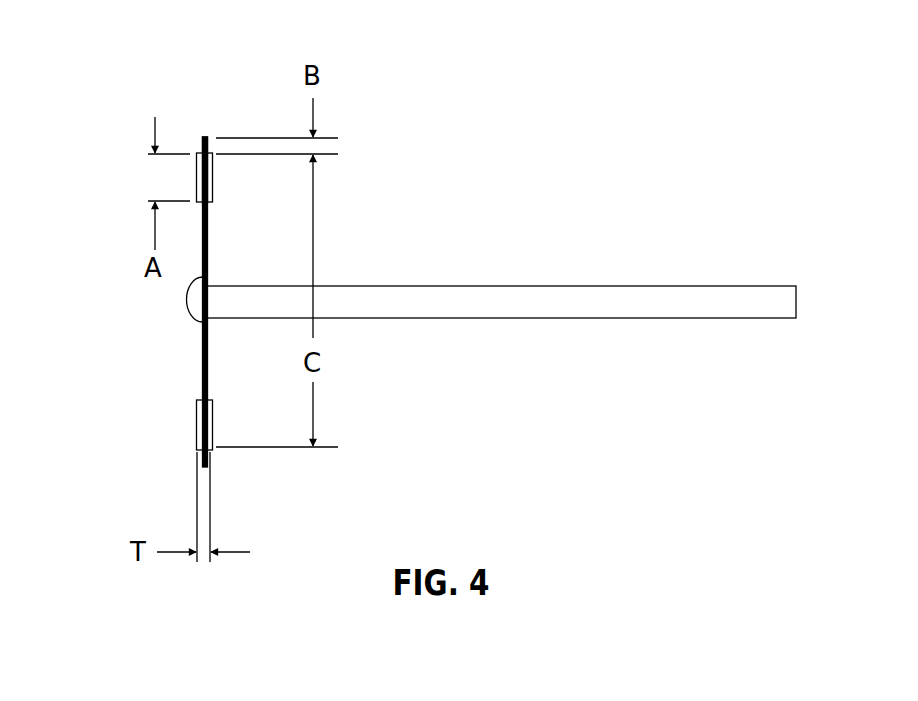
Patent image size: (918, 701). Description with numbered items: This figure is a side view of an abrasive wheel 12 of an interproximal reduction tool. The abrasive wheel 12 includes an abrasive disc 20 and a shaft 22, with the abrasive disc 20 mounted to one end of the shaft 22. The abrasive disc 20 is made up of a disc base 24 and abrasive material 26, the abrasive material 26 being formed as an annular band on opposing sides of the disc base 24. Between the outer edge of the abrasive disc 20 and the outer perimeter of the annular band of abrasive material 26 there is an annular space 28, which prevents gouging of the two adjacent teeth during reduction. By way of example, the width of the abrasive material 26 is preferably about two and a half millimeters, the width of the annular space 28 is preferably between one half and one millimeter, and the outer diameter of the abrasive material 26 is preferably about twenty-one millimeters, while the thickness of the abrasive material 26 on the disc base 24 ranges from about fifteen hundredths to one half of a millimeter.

The abrasive wheel 12 is at (420, 282).
The abrasive disc 20 is at (187, 357).
The shaft 22 is at (518, 318).
The disc base 24 is at (208, 363).
The abrasive material 26 is at (213, 178).
The annular space 28 is at (202, 153).